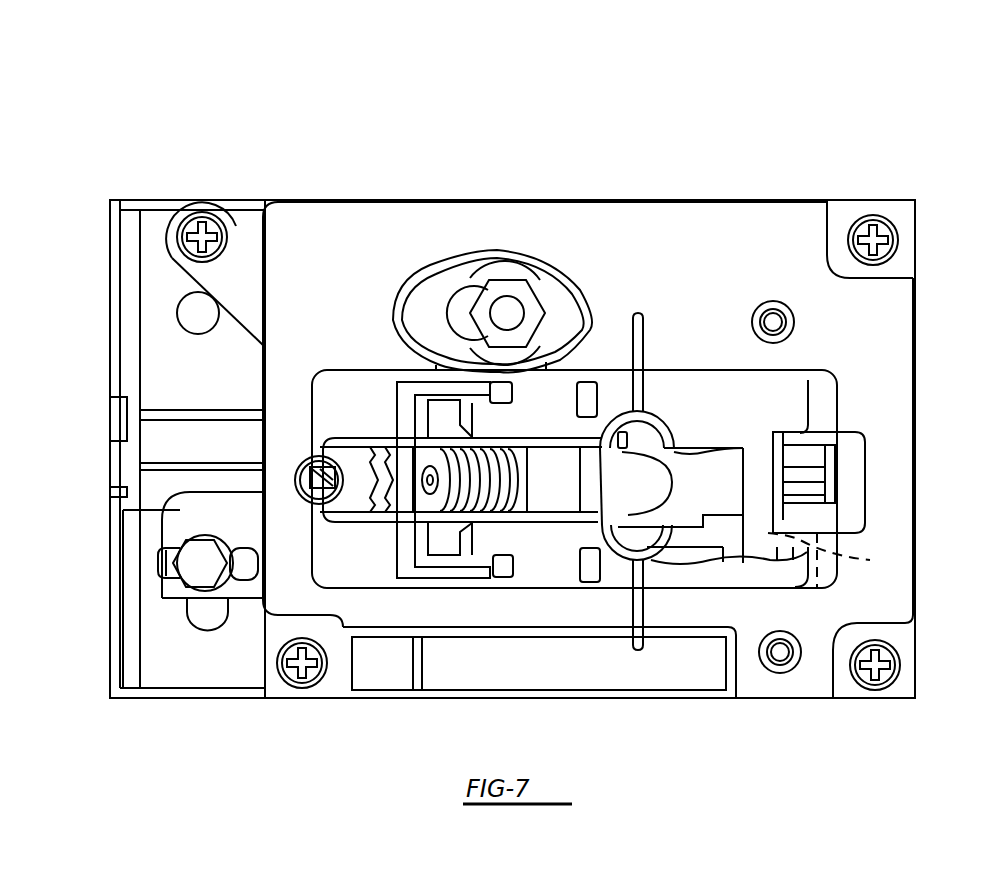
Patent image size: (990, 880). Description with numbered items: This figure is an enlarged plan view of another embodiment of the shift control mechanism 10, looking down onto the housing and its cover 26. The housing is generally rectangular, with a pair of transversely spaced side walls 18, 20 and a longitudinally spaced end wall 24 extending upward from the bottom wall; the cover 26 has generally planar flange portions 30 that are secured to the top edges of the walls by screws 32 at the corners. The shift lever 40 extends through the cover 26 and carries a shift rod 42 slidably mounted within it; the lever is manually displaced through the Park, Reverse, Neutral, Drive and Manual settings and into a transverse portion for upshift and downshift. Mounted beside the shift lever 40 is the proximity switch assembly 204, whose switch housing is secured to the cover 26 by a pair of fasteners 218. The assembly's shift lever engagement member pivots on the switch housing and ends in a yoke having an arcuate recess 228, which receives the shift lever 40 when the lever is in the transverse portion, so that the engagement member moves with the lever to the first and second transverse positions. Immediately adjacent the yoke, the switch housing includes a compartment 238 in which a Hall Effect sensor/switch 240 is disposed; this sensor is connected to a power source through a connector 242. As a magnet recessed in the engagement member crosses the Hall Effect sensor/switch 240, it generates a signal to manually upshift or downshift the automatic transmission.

The shift control mechanism 10 is at (142, 170).
The side wall 18 is at (197, 690).
The side wall 20 is at (176, 200).
The end wall 24 is at (110, 325).
The cover 26 is at (402, 213).
The flange portions 30 is at (255, 208).
The screws 32 is at (233, 212).
The shift lever 40 is at (355, 462).
The shift rod 42 is at (303, 468).
The proximity switch assembly 204 is at (783, 466).
The fasteners 218 is at (760, 300).
The arcuate recess 228 is at (628, 452).
The compartment 238 is at (752, 452).
The Hall Effect sensor/switch 240 is at (870, 560).
The connector 242 is at (820, 485).